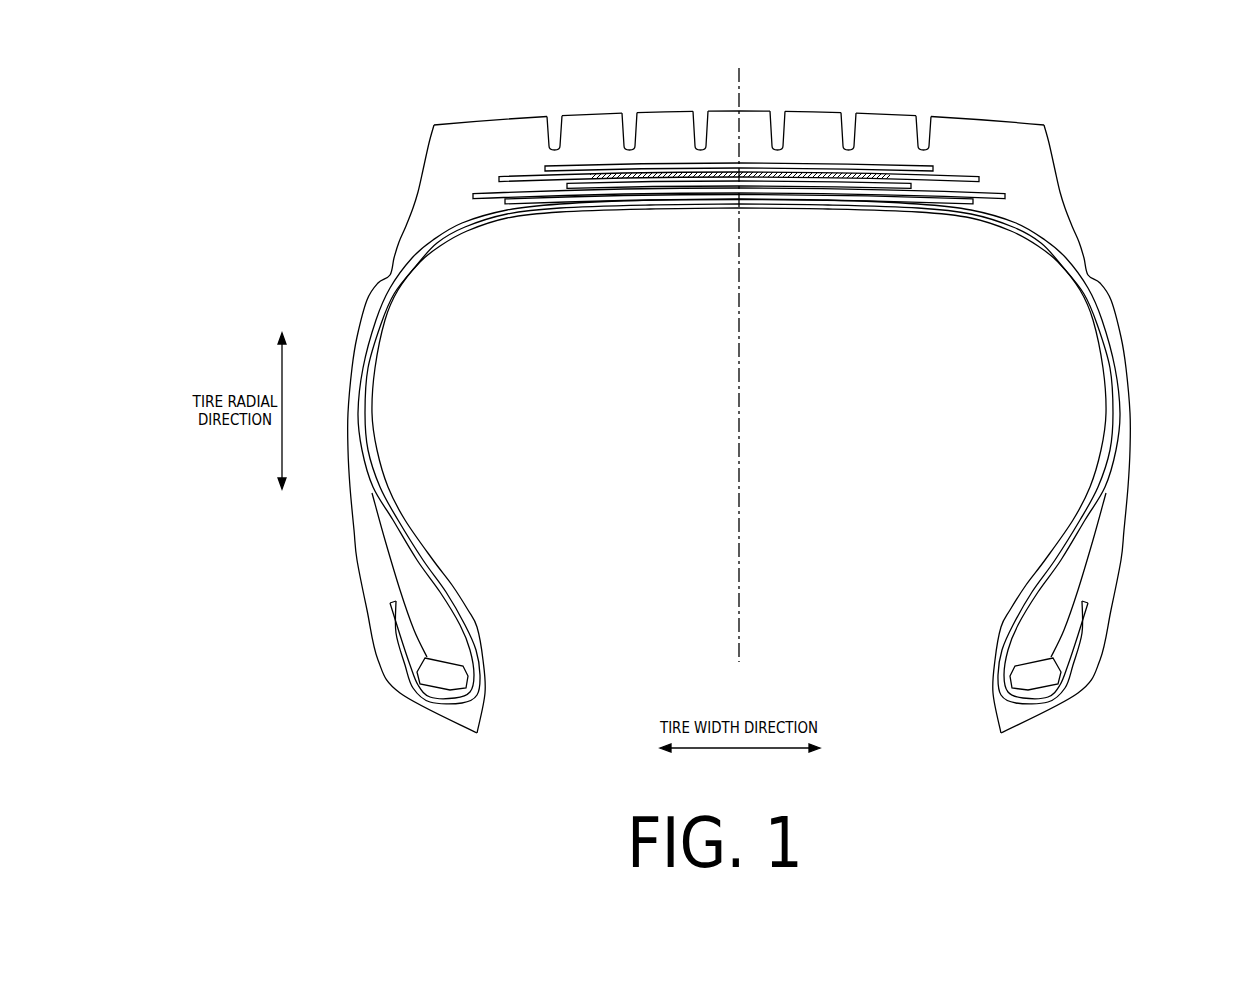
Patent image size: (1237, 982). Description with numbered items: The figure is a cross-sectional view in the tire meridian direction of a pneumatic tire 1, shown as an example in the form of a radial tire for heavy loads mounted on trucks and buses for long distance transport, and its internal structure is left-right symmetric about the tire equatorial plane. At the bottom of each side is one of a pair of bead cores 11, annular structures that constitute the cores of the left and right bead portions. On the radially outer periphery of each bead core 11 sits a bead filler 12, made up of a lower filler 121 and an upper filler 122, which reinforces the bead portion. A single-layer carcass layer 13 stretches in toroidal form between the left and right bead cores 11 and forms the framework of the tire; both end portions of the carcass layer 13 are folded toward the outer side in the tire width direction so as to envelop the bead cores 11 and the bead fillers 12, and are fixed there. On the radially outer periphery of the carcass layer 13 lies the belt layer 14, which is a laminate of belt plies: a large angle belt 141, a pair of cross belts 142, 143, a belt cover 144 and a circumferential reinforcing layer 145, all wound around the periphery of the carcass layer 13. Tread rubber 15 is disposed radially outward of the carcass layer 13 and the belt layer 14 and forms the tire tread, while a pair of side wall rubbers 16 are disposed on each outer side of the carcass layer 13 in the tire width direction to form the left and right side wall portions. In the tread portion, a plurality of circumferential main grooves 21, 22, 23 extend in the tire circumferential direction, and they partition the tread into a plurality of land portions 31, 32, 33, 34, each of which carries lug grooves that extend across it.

The pneumatic tire 1 is at (1100, 101).
The bead core 11 is at (432, 670).
The bead filler 12 is at (297, 578).
The lower filler 121 is at (435, 622).
The upper filler 122 is at (400, 590).
The carcass layer 13 is at (1036, 254).
The belt layer 14 is at (990, 256).
The large angle belt 141 is at (960, 199).
The cross belt 142 is at (928, 192).
The cross belt 143 is at (878, 186).
The belt cover 144 is at (845, 178).
The circumferential reinforcing layer 145 is at (803, 170).
The tread rubber 15 is at (880, 104).
The side wall rubber 16 is at (396, 233).
The circumferential main groove 21 is at (702, 120).
The circumferential main groove 22 is at (630, 123).
The circumferential main groove 23 is at (555, 127).
The land portion 31 is at (762, 112).
The land portion 32 is at (665, 112).
The land portion 33 is at (588, 113).
The land portion 34 is at (495, 121).